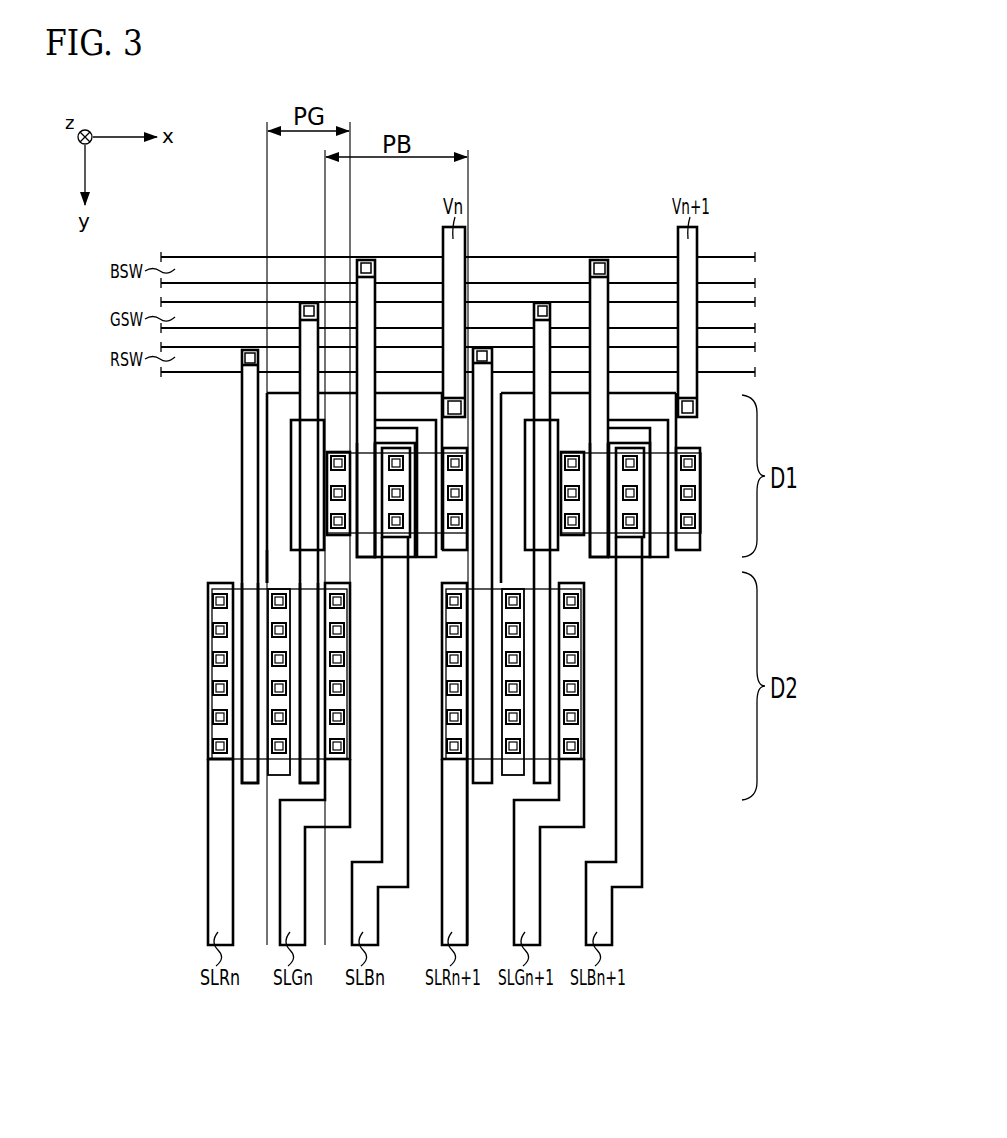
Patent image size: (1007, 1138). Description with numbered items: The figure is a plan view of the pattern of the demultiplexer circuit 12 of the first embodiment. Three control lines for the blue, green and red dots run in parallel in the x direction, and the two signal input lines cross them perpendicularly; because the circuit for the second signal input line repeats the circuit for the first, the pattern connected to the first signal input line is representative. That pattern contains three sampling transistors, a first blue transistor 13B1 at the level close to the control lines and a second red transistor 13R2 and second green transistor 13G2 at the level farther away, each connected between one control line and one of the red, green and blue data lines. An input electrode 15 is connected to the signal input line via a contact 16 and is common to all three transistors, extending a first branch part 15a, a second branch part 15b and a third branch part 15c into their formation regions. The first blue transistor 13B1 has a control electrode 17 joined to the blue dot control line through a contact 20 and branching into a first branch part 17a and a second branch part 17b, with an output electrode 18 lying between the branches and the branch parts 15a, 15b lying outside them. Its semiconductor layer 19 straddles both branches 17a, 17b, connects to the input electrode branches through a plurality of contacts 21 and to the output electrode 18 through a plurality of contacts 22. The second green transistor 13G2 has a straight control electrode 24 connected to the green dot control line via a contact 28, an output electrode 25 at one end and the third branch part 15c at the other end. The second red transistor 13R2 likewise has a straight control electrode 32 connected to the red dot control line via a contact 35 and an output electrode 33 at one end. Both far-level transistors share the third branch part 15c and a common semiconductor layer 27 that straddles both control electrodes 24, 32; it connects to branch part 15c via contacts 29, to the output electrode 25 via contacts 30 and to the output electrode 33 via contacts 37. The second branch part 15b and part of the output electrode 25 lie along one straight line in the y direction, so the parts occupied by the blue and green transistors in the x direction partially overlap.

The demultiplexer circuit 12 is at (497, 150).
The first blue transistor 13B1 is at (305, 508).
The second red transistor 13R2 is at (245, 792).
The second green transistor 13G2 is at (333, 792).
The input electrode 15 is at (280, 410).
The first branch part 15a is at (453, 435).
The second branch part 15b is at (337, 437).
The third branch part 15c is at (278, 562).
The contact 16 is at (455, 408).
The control electrode 17 is at (382, 362).
The first branch part 17a is at (367, 551).
The second branch part 17b is at (427, 550).
The output electrode 18 is at (395, 672).
The semiconductor layer 19 is at (423, 452).
The contact 20 is at (367, 262).
The contacts 21 is at (332, 462).
The contacts 22 is at (395, 523).
The control electrode 24 is at (308, 728).
The output electrode 25 is at (337, 782).
The semiconductor layer 27 is at (223, 759).
The contact 28 is at (310, 305).
The contacts 29 is at (280, 658).
The contacts 30 is at (340, 687).
The control electrode 32 is at (250, 613).
The output electrode 33 is at (220, 804).
The contact 35 is at (250, 350).
The contacts 37 is at (220, 630).